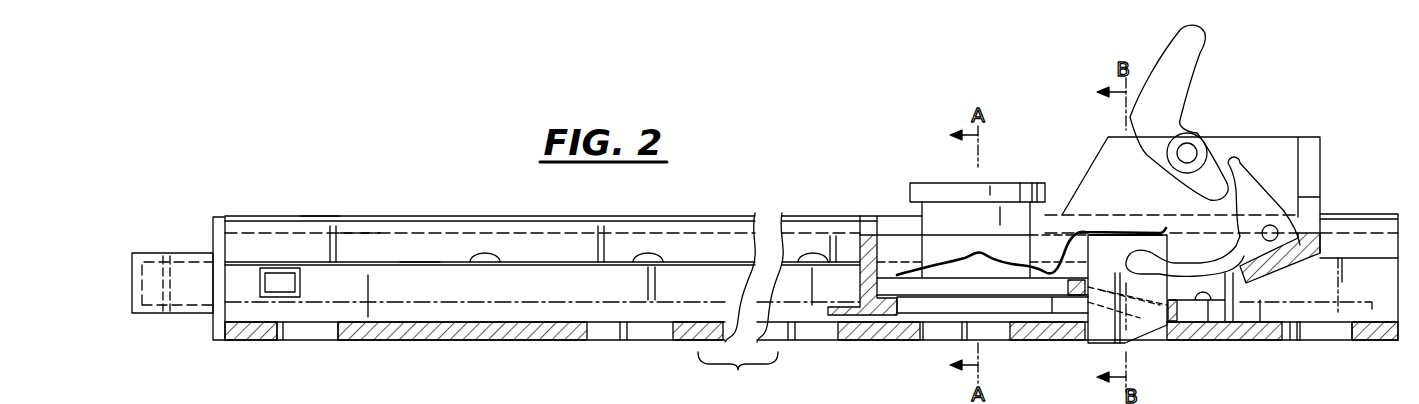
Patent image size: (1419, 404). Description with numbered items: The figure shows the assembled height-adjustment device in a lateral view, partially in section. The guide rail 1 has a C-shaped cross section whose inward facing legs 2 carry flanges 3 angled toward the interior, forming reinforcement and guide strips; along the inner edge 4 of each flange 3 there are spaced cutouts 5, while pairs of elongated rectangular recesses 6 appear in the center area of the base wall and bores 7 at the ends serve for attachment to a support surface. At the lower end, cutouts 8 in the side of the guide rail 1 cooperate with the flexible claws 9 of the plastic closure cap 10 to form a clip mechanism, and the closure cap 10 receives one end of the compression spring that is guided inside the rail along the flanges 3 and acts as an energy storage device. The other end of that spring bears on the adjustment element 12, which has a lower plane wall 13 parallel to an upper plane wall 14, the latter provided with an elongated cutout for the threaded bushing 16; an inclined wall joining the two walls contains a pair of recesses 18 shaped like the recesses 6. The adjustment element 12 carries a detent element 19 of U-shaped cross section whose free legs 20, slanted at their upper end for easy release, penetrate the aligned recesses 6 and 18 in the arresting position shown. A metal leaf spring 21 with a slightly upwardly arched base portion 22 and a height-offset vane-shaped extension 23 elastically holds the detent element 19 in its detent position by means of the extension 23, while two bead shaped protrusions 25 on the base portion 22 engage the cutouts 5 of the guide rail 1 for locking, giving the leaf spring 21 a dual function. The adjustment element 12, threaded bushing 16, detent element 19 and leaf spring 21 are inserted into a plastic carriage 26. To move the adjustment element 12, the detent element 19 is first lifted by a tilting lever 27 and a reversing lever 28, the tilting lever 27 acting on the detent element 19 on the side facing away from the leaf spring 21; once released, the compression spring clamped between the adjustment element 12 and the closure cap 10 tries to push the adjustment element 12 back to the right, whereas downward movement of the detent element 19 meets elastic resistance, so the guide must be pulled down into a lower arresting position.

The guide rail 1 is at (293, 216).
The inward facing legs 2 is at (317, 228).
The flanges 3 is at (358, 247).
The inner edge 4 is at (425, 260).
The cutouts 5 is at (483, 262).
The recesses 6 is at (632, 332).
The bores 7 is at (315, 334).
The cutouts 8 is at (272, 267).
The flexible claws 9 is at (275, 290).
The closure cap 10 is at (190, 298).
The adjustment element 12 is at (926, 236).
The lower plane wall 13 is at (887, 272).
The upper plane wall 14 is at (1212, 337).
The threaded bushing 16 is at (935, 210).
The recesses 18 is at (1142, 328).
The detent element 19 is at (1063, 235).
The free legs 20 is at (1098, 338).
The leaf spring 21 is at (973, 323).
The base portion 22 is at (931, 273).
The vane-shaped extension 23 is at (1127, 233).
The bead shaped protrusions 25 is at (973, 247).
The carriage 26 is at (855, 250).
The tilting lever 27 is at (1247, 178).
The reversing lever 28 is at (1178, 88).